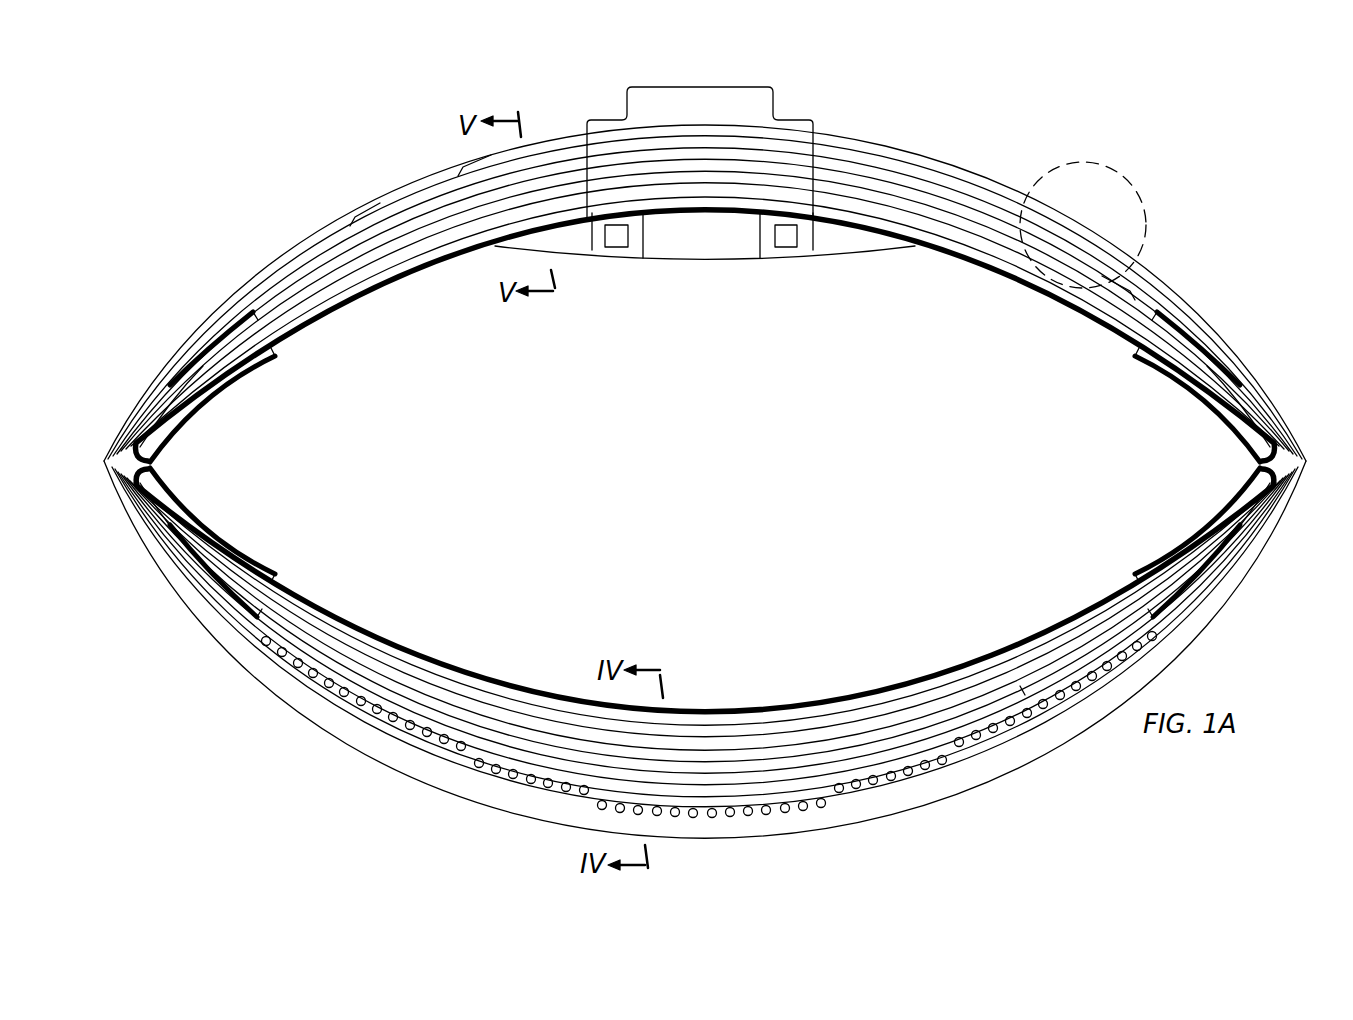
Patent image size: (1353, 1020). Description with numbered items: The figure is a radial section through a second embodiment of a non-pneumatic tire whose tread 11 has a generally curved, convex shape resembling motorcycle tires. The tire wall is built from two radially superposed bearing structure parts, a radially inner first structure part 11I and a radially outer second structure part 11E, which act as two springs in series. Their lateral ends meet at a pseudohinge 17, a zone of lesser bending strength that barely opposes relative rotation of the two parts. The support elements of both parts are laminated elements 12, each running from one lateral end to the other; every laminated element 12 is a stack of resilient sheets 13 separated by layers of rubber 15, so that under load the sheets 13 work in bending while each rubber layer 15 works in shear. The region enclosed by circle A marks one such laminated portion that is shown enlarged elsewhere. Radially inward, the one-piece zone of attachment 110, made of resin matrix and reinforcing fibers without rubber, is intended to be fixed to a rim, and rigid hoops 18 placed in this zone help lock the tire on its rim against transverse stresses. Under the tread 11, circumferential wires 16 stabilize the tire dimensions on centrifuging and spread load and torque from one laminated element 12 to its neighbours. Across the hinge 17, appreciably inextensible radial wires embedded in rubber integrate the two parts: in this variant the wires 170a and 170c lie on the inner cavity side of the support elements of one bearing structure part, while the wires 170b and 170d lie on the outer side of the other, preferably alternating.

The tread 11 is at (904, 818).
The second structure part 11E is at (288, 756).
The first structure part 11I is at (230, 273).
The laminated element 12 is at (1135, 298).
The resilient sheet 13 is at (447, 162).
The layer of rubber 15 is at (346, 250).
The circumferential wire 16 is at (482, 790).
The hinge 17 is at (148, 422).
The rigid hoop 18 is at (786, 248).
The zone of attachment 110 is at (667, 98).
The radial wire 170a is at (250, 545).
The radial wire 170b is at (173, 385).
The radial wire 170c is at (252, 392).
The radial wire 170d is at (168, 541).
The circle A is at (1117, 178).